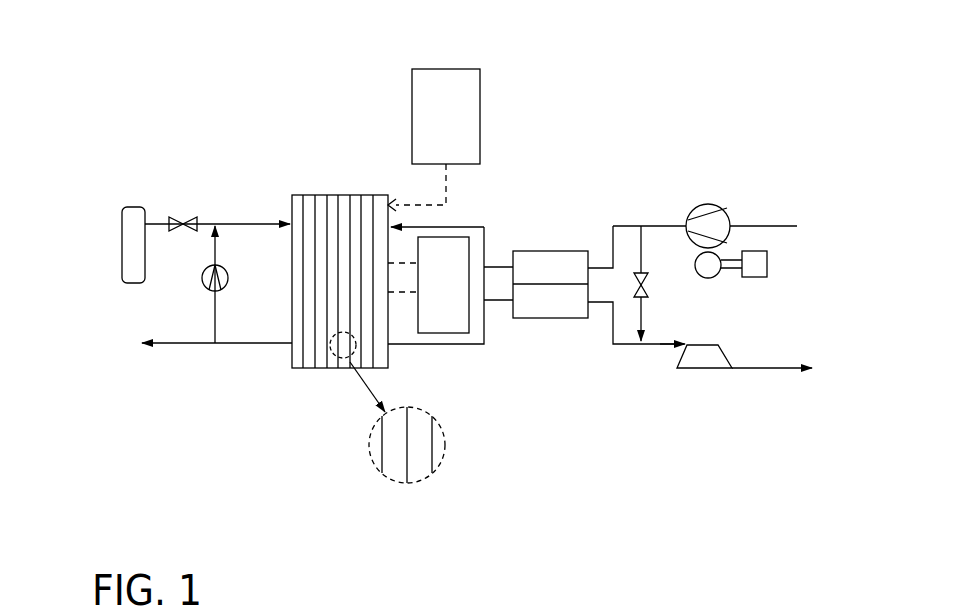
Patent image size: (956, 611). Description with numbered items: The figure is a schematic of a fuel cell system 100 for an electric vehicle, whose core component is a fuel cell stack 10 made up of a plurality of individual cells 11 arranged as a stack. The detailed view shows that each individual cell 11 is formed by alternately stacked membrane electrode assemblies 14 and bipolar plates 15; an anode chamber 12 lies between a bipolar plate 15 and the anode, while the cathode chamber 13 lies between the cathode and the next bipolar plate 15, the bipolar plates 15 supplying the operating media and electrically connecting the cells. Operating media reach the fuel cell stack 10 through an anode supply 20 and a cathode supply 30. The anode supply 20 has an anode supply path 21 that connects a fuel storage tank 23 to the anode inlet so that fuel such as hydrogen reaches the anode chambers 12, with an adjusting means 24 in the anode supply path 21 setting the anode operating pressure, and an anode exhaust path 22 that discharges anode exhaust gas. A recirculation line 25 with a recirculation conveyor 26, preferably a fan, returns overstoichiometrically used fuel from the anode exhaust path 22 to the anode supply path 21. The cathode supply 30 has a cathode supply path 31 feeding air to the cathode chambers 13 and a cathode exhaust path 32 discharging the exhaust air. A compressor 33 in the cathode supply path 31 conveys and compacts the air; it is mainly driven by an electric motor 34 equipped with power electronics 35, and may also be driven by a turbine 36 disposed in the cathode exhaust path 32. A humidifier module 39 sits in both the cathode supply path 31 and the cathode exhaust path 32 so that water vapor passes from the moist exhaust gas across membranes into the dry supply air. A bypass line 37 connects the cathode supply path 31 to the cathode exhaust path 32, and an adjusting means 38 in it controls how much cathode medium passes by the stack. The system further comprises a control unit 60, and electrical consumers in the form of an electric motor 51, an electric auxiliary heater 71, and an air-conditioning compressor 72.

The fuel cell system 100 is at (512, 145).
The fuel cell stack 10 is at (358, 163).
The individual cell 11 is at (321, 204).
The anode chamber 12 is at (396, 473).
The cathode chamber 13 is at (422, 472).
The membrane electrode assembly 14 is at (407, 433).
The bipolar plate 15 is at (382, 451).
The anode supply 20 is at (153, 133).
The anode supply path 21 is at (252, 224).
The anode exhaust path 22 is at (163, 343).
The fuel storage tank 23 is at (135, 245).
The adjusting means 24 is at (188, 224).
The recirculation line 25 is at (215, 313).
The recirculation conveyor 26 is at (225, 275).
The cathode supply 30 is at (548, 210).
The cathode supply path 31 is at (757, 226).
The cathode exhaust path 32 is at (748, 368).
The compressor 33 is at (706, 207).
The electric motor 34 is at (710, 272).
The power electronics 35 is at (758, 267).
The turbine 36 is at (693, 361).
The bypass line 37 is at (641, 315).
The adjusting means 38 is at (641, 297).
The humidifier module 39 is at (548, 308).
The electric motor 51 is at (428, 285).
The electric auxiliary heater 71 is at (428, 285).
The air-conditioning compressor 72 is at (428, 285).
The control unit 60 is at (412, 116).